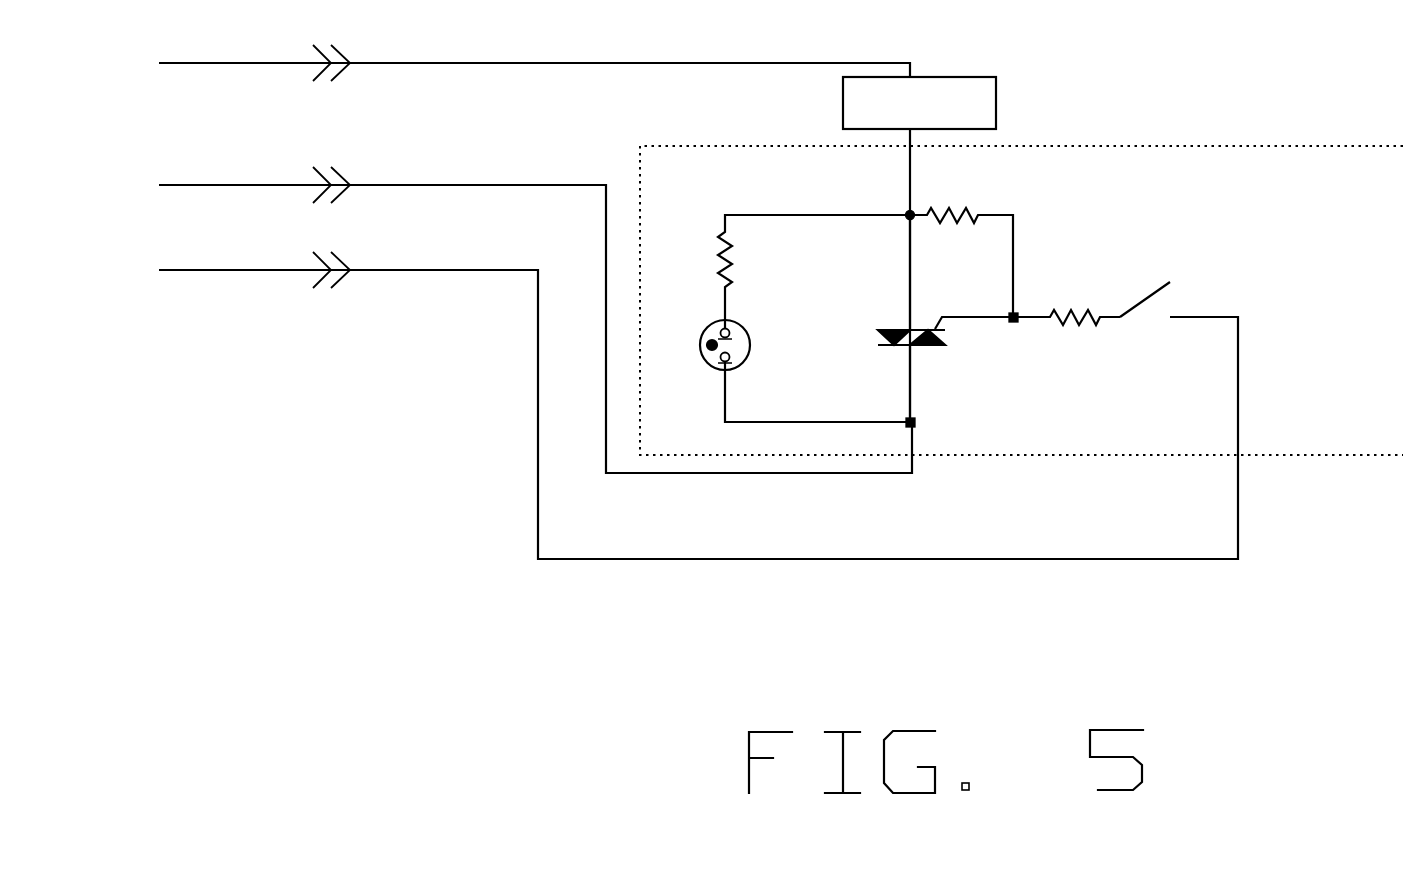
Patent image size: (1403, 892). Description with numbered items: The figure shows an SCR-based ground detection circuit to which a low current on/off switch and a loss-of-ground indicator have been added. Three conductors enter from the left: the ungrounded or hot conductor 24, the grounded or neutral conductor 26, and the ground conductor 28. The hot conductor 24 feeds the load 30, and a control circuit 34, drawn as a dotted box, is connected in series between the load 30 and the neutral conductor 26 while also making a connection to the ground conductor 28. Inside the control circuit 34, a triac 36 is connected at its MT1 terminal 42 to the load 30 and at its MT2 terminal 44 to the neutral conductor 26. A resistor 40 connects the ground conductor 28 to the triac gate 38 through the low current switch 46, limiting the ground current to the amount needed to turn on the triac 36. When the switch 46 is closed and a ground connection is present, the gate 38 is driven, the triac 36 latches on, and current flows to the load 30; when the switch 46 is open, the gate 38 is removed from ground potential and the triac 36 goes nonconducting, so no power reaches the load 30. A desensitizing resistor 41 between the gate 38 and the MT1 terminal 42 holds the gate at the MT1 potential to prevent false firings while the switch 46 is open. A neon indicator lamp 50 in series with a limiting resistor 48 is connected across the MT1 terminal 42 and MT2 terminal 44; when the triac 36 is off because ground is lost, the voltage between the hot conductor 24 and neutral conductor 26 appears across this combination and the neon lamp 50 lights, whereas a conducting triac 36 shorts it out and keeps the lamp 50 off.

The ungrounded conductor 24 is at (482, 45).
The grounded conductor 26 is at (448, 165).
The ground conductor 28 is at (433, 251).
The load 30 is at (1013, 93).
The control circuit 34 is at (1288, 127).
The triac 36 is at (860, 337).
The triac gate 38 is at (963, 302).
The resistor 40 is at (1066, 302).
The desensitizing resistor 41 is at (962, 197).
The MT1 terminal 42 is at (897, 302).
The MT2 terminal 44 is at (903, 367).
The low current switch 46 is at (1152, 335).
The limiting resistor 48 is at (716, 258).
The neon indicator lamp 50 is at (702, 320).